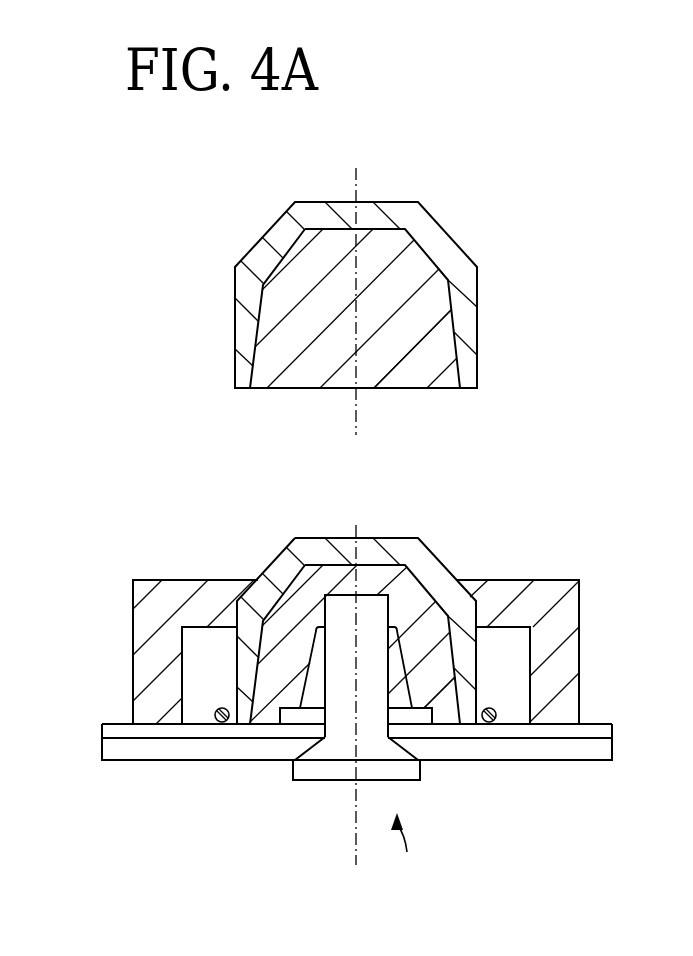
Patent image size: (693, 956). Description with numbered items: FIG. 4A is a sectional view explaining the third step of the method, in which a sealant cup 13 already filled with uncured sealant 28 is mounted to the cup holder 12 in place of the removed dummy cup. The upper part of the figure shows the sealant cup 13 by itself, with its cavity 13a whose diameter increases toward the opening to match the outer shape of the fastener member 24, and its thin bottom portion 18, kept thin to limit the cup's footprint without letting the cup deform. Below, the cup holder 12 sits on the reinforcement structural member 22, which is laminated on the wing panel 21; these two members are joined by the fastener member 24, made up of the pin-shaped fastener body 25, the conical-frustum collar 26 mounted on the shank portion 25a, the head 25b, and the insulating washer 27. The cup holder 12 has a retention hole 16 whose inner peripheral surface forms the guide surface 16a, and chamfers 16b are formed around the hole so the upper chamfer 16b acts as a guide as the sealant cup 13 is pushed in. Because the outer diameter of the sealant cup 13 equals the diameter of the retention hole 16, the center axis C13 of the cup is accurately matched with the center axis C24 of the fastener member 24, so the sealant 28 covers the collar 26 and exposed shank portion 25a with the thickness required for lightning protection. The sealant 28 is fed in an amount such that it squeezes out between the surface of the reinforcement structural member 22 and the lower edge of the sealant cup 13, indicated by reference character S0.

The cup holder 12 is at (560, 580).
The sealant cup 13 is at (392, 202).
The cavity 13a is at (452, 348).
The retention hole 16 is at (466, 590).
The guide surface 16a is at (253, 583).
The chamfers 16b is at (486, 590).
The bottom portion 18 is at (233, 375).
The wing panel 21 is at (548, 762).
The reinforcement structural member 22 is at (602, 723).
The fastener member 24 is at (406, 852).
The fastener body 25 is at (400, 781).
The shank portion 25a is at (343, 594).
The head of stud 25b is at (307, 782).
The collar 26 is at (398, 628).
The washer 27 is at (425, 707).
The sealant 28 is at (412, 378).
The squeezed-out sealant S0 is at (213, 711).
The center axis of sealant cup C13 is at (352, 410).
The center axis of fastener member C24 is at (355, 850).